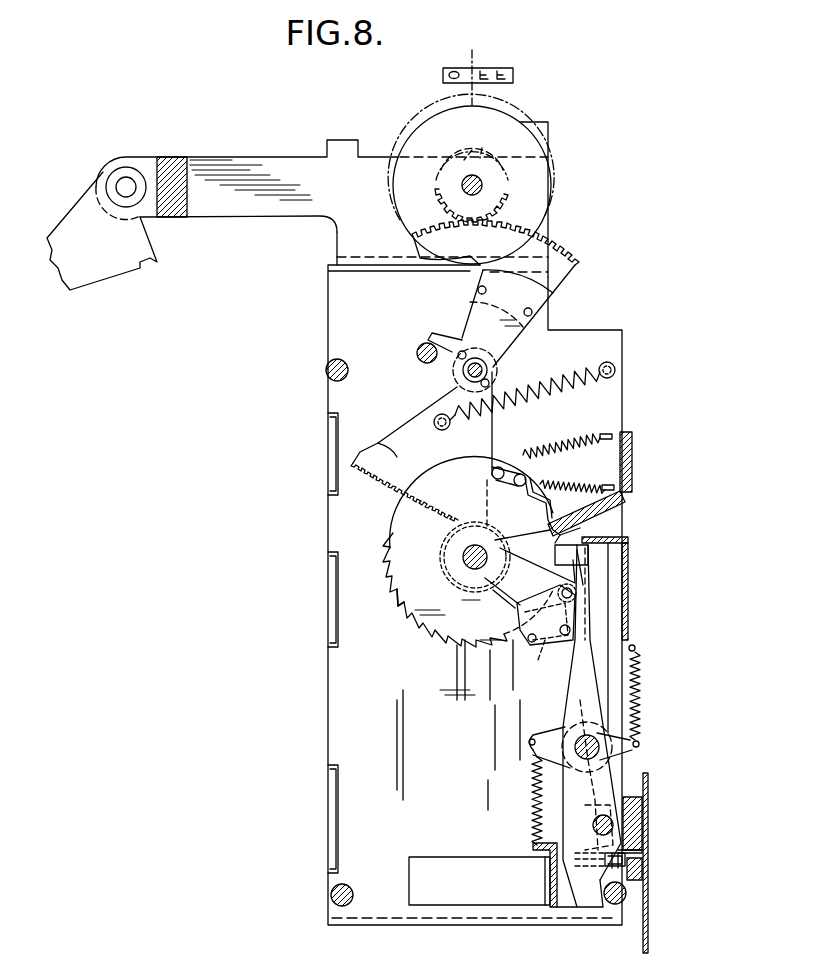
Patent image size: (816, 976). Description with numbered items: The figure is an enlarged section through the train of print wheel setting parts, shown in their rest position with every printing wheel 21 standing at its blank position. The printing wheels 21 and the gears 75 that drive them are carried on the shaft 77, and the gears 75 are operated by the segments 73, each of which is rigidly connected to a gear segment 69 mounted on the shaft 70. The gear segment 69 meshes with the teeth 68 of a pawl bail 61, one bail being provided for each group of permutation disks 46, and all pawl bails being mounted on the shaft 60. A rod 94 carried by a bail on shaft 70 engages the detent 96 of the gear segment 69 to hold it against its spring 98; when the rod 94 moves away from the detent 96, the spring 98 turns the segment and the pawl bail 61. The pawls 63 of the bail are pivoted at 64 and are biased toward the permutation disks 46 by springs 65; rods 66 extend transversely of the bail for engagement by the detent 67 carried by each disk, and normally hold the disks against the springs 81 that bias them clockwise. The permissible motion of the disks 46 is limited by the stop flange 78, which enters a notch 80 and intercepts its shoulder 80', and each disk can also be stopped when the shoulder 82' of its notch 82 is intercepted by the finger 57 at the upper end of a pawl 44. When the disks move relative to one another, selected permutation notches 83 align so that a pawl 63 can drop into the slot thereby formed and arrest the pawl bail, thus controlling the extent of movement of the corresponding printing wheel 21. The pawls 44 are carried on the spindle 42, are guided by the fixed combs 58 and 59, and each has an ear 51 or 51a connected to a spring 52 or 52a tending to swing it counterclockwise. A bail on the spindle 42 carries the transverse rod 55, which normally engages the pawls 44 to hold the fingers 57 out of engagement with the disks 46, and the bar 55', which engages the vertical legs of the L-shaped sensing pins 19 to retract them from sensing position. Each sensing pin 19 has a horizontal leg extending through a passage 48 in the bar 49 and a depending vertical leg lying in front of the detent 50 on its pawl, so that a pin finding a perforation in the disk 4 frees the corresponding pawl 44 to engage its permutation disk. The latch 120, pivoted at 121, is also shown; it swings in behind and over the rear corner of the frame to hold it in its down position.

The pivot 121 is at (128, 185).
The latch 120 is at (137, 247).
The printing wheels 21 is at (493, 116).
The shaft 77 is at (483, 180).
The gears 75 is at (500, 195).
The segments 73 is at (515, 297).
The shaft 70 is at (488, 372).
The detent 96 is at (442, 338).
The rod 94 is at (427, 363).
The gear segment 69 is at (394, 452).
The spring 98 is at (568, 374).
The springs 81 is at (565, 470).
The shoulder 80' is at (552, 506).
The notch 80 is at (586, 512).
The stop flange 78 is at (628, 512).
The shoulder 82' is at (589, 529).
The comb 58 is at (628, 540).
The finger 57 is at (575, 555).
The permutation disks 46 is at (407, 513).
The teeth 68 is at (443, 553).
The shaft 60 is at (468, 566).
The notch 82 is at (535, 556).
The pawl bail 61 is at (515, 605).
The pawls 63 is at (548, 622).
The rods 66 is at (572, 594).
The pivot 64 is at (570, 630).
The detent 67 is at (580, 583).
The permutation notches 83 is at (448, 645).
The springs 65 is at (540, 655).
The pawls 44 is at (596, 698).
The spindle 42 is at (600, 747).
The ear 51 is at (552, 738).
The ear 51a is at (620, 735).
The spring 52a is at (639, 669).
The spring 52 is at (536, 781).
The comb 59 is at (556, 910).
The rod 55 is at (599, 819).
The disk 4 is at (649, 790).
The bar 49 is at (636, 810).
The detent 50 is at (626, 848).
The passages 48 is at (628, 857).
The sensing pins 19 is at (640, 859).
The bar 55' is at (661, 879).